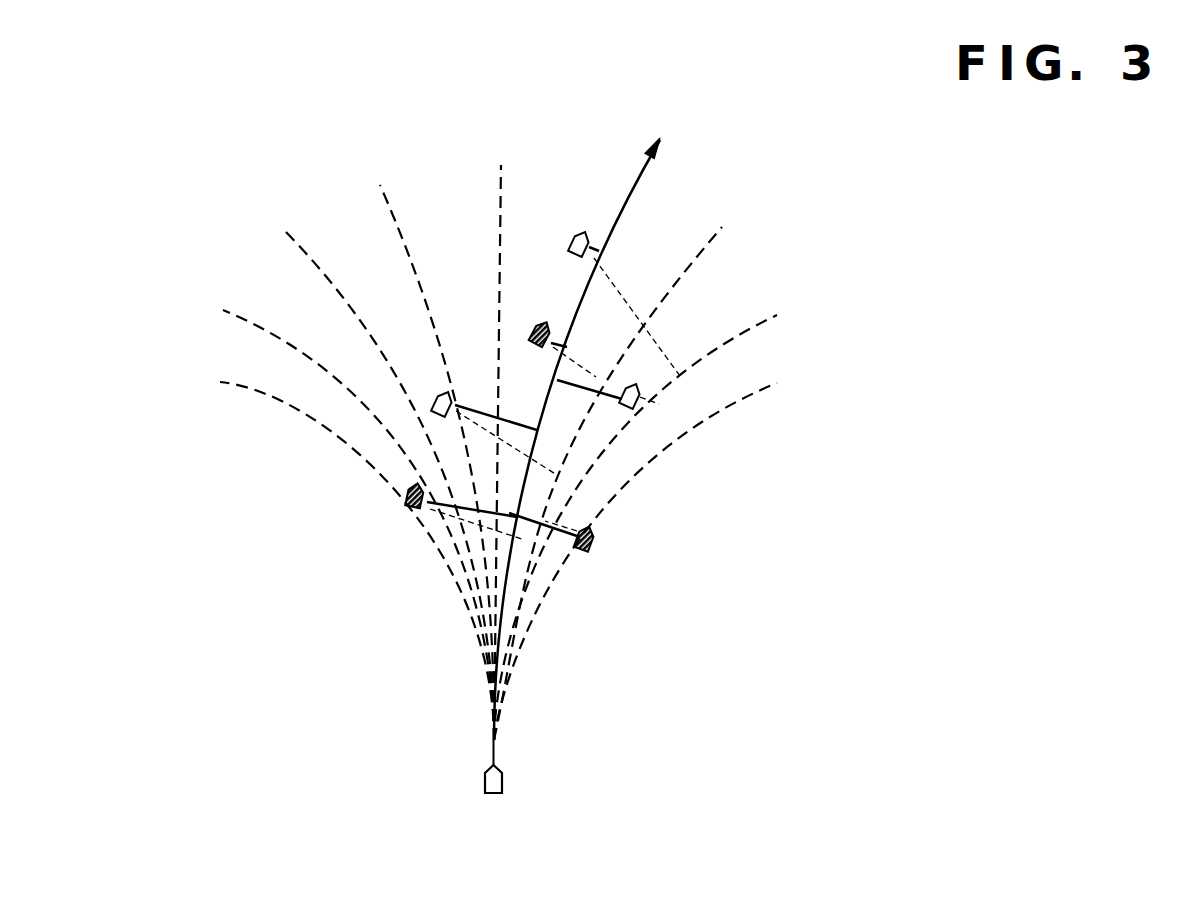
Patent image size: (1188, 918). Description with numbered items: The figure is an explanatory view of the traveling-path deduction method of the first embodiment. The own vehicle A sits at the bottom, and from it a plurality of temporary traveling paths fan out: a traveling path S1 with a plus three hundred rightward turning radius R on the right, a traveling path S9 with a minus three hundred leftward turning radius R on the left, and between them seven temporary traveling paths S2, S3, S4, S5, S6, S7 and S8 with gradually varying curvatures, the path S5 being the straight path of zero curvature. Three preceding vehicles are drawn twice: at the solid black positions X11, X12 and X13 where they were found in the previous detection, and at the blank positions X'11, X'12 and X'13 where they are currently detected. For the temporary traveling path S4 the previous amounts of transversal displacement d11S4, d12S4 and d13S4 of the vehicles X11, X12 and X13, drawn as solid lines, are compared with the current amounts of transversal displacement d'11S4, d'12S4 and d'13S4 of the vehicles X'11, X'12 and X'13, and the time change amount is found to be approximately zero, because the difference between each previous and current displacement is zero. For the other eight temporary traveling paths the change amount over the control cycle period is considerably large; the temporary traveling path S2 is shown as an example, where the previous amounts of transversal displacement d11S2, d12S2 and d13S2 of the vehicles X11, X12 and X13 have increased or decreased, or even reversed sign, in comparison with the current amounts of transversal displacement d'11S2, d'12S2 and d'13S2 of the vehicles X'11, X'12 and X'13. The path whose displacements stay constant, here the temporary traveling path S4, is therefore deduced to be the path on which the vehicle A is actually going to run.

The vehicle A is at (493, 782).
The traveling path S1 is at (708, 555).
The temporary traveling path S2 is at (654, 515).
The temporary traveling path S3 is at (624, 475).
The temporary traveling path S4 is at (589, 426).
The temporary traveling path S5 is at (501, 423).
The temporary traveling path S6 is at (433, 450).
The temporary traveling path S7 is at (377, 473).
The temporary traveling path S8 is at (341, 515).
The traveling path S9 is at (285, 555).
The vehicle X11 is at (408, 497).
The vehicle X12 is at (533, 330).
The vehicle X13 is at (597, 541).
The vehicle X'11 is at (423, 381).
The vehicle X'12 is at (551, 240).
The vehicle X'13 is at (679, 423).
The amount of transversal displacement d11S4 is at (468, 508).
The amount of transversal displacement d11S2 is at (478, 525).
The amount of transversal displacement d12S4 is at (565, 334).
The amount of transversal displacement d12S2 is at (579, 375).
The amount of transversal displacement d13S4 is at (546, 524).
The amount of transversal displacement d13S2 is at (566, 528).
The amount of transversal displacement d'11S4 is at (486, 366).
The amount of transversal displacement d'11S2 is at (591, 453).
The amount of transversal displacement d'12S4 is at (568, 218).
The amount of transversal displacement d'12S2 is at (645, 307).
The amount of transversal displacement d'13S4 is at (663, 345).
The amount of transversal displacement d'13S2 is at (726, 422).